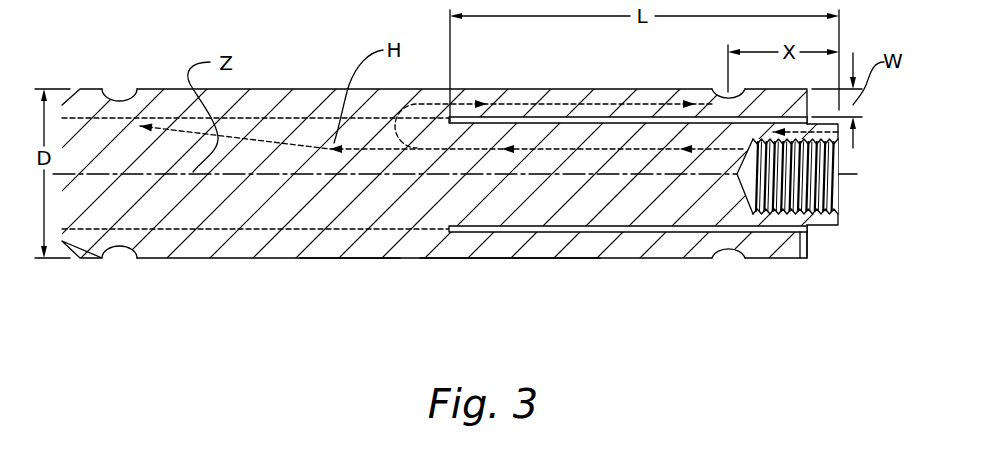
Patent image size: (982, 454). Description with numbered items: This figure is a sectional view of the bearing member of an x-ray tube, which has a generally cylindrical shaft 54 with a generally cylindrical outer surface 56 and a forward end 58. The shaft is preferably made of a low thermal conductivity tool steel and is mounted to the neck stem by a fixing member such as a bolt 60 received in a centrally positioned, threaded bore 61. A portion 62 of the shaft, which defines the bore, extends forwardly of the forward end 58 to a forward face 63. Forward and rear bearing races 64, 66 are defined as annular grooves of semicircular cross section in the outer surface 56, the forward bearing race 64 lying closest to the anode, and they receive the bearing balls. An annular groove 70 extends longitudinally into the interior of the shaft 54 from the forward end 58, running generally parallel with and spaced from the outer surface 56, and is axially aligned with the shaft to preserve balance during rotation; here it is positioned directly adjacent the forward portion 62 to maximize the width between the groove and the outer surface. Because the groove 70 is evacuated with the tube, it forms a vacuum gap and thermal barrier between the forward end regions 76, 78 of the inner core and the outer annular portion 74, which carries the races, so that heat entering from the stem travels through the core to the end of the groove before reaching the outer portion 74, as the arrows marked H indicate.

The shaft 54 is at (305, 93).
The outer surface 56 is at (503, 258).
The forward end 58 is at (812, 248).
The bolt 60 is at (827, 158).
The threaded bore 61 is at (778, 192).
The forward portion 62 is at (290, 202).
The forward face 63 is at (838, 222).
The forward bearing race 64 is at (726, 258).
The rear bearing race 66 is at (118, 100).
The annular groove 70 is at (518, 117).
The outer annular portion 74 is at (340, 250).
The forward end region of inner portion 76 is at (548, 160).
The forward end region of outer portion 78 is at (582, 248).